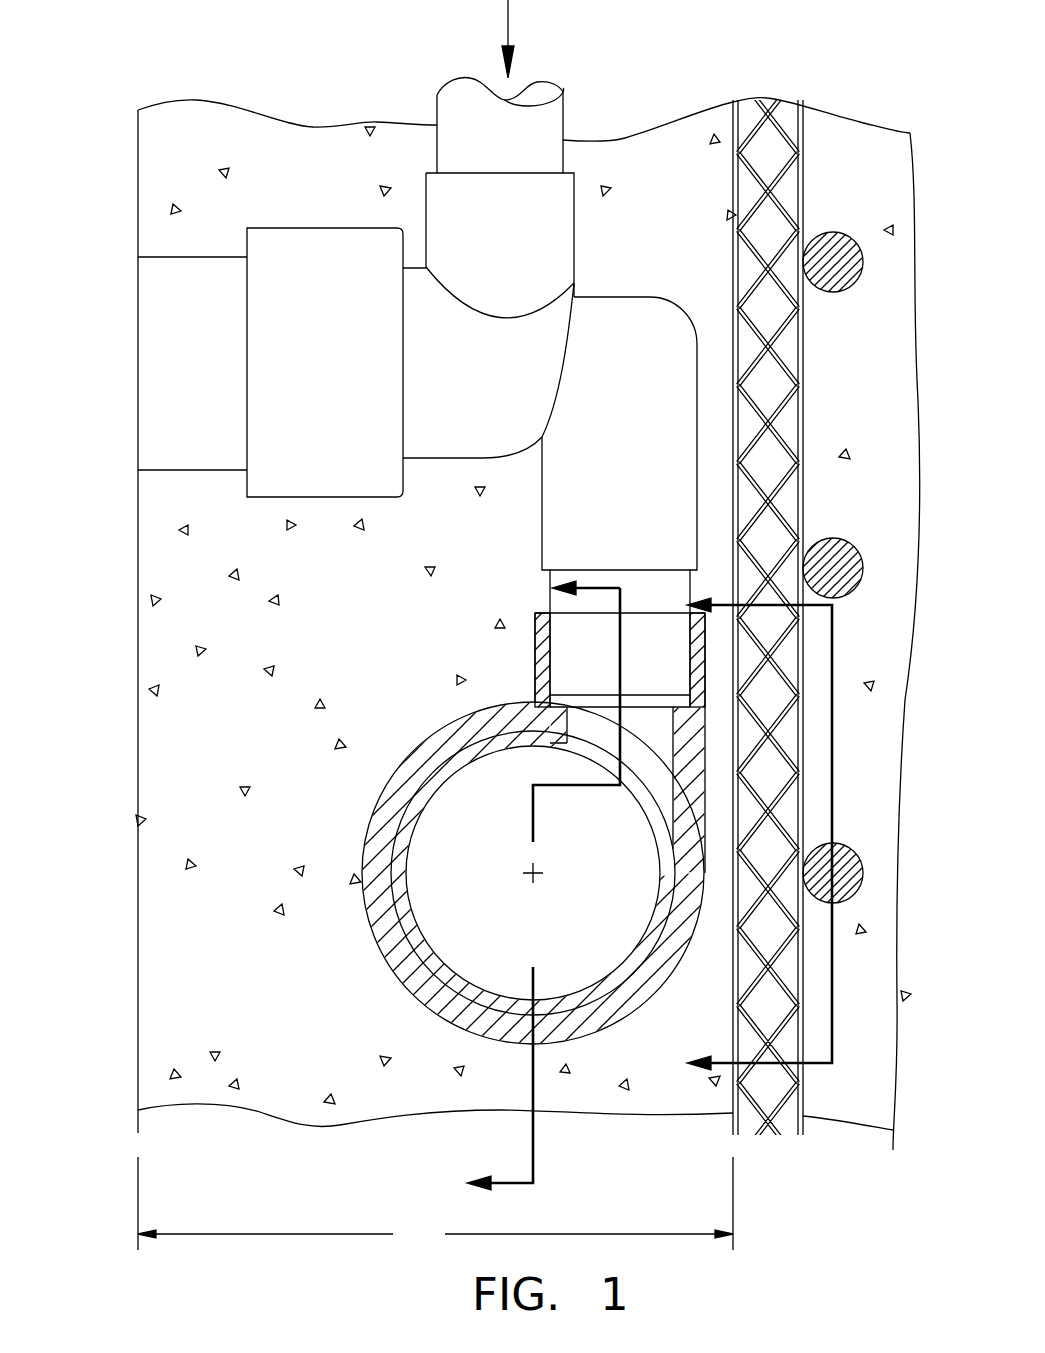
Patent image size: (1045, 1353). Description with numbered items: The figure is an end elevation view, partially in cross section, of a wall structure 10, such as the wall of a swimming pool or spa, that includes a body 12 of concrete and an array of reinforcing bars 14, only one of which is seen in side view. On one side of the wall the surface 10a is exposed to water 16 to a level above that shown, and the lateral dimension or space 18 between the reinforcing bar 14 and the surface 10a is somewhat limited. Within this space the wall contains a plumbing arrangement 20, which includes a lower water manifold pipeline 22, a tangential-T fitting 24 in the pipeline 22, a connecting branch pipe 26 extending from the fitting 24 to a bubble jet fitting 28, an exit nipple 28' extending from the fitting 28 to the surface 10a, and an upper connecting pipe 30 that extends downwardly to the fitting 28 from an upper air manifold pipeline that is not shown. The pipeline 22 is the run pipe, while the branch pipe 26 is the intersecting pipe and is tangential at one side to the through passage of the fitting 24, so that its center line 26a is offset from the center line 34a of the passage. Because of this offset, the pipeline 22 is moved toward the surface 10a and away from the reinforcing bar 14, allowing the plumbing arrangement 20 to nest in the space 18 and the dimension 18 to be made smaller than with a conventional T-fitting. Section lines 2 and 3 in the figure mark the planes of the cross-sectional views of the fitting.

The wall structure 10 is at (222, 92).
The surface 10a is at (138, 762).
The body of concrete 12 is at (158, 872).
The reinforcing bars 14 is at (748, 113).
The water 16 is at (98, 155).
The lateral dimension or space 18 is at (435, 1204).
The plumbing arrangement 20 is at (462, 521).
The lower water manifold pipeline 22 is at (358, 978).
The tangential-T fitting 24 is at (365, 847).
The connecting branch pipe 26 is at (647, 593).
The center line of connecting branch pipe 26a is at (620, 638).
The bubble jet fitting 28 is at (550, 371).
The exit nipple 28' is at (282, 362).
The upper connecting pipe 30 is at (547, 125).
The center line of through passage 34a is at (540, 875).
The section line 2- 2 is at (780, 837).
The section line 3- 3 is at (530, 883).